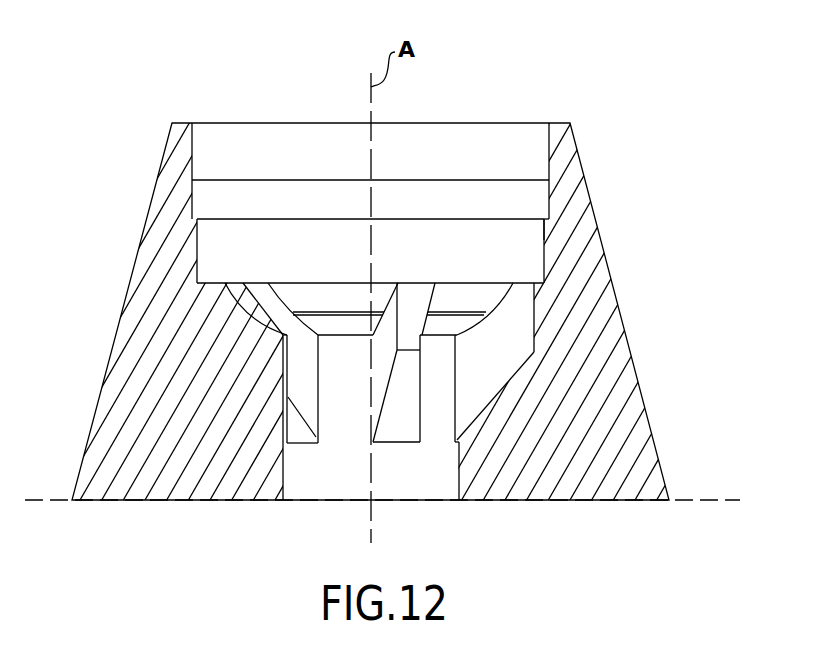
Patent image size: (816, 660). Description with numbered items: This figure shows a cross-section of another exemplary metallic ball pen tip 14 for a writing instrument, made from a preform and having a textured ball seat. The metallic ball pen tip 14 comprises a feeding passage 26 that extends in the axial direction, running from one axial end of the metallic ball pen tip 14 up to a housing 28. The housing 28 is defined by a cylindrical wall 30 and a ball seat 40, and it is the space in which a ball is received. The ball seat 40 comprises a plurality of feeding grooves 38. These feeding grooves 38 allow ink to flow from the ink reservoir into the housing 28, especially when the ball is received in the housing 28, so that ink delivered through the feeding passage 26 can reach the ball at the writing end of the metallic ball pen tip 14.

The metallic ball pen tip 14 is at (617, 85).
The housing 28 is at (462, 152).
The cylindrical wall 30 is at (547, 183).
The ball seat 40 is at (335, 298).
The feeding grooves 38 is at (412, 313).
The feeding passage 26 is at (314, 482).